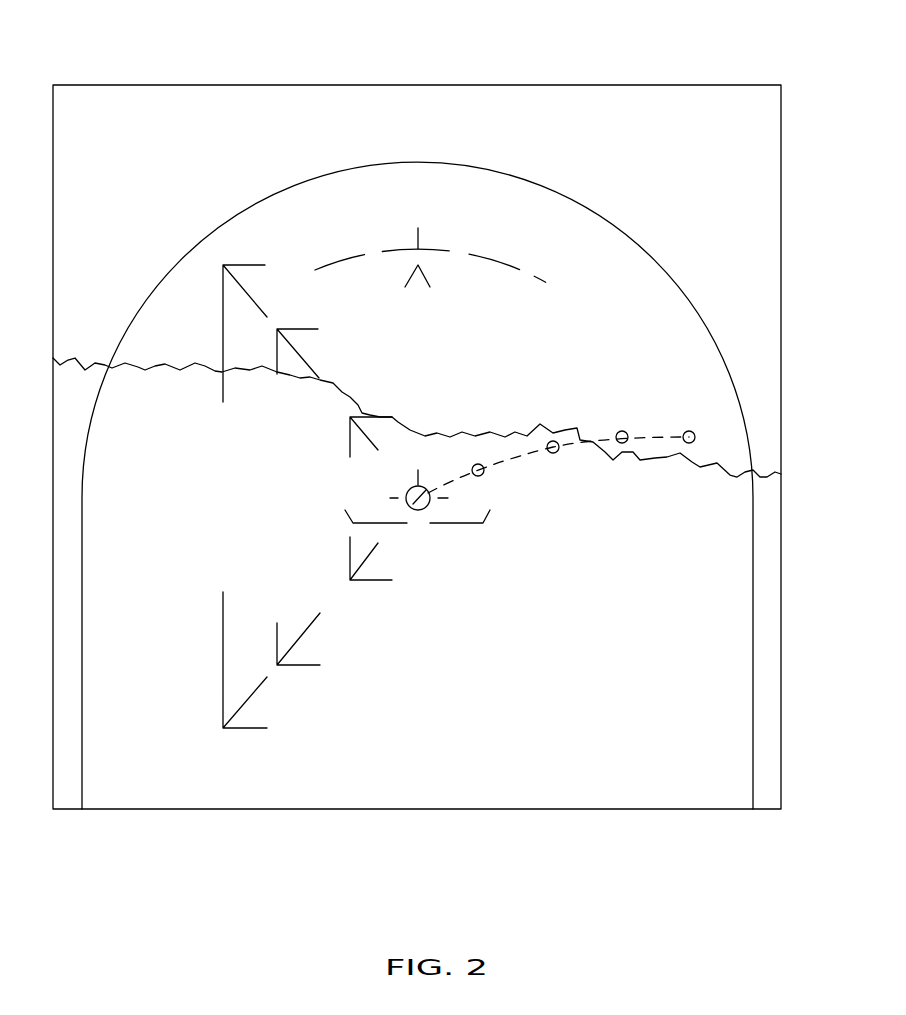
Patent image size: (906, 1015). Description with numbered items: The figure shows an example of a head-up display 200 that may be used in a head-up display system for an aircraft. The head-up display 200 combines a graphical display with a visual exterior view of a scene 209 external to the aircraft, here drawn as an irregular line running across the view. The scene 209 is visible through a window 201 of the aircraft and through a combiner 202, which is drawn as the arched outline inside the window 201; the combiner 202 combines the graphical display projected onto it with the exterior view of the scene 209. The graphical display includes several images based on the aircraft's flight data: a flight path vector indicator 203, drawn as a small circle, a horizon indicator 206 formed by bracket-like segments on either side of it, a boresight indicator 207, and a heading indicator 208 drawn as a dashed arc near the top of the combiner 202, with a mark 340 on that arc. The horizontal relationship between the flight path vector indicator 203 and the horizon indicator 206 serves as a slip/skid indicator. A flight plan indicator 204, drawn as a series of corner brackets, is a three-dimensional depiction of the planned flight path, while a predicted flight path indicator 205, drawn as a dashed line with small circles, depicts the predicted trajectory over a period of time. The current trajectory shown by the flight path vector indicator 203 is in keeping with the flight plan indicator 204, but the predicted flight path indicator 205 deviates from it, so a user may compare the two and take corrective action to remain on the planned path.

The head-up display 200 is at (244, 44).
The window 201 is at (673, 85).
The combiner 202 is at (719, 350).
The flight path vector indicator 203 is at (411, 487).
The flight plan indicator 204 is at (238, 283).
The predicted flight path indicator 205 is at (660, 437).
The horizon indicator 206 is at (345, 510).
The boresight indicator 207 is at (427, 275).
The heading indicator 208 is at (421, 200).
The scene 209 is at (210, 370).
The heading tick mark 340 is at (418, 226).